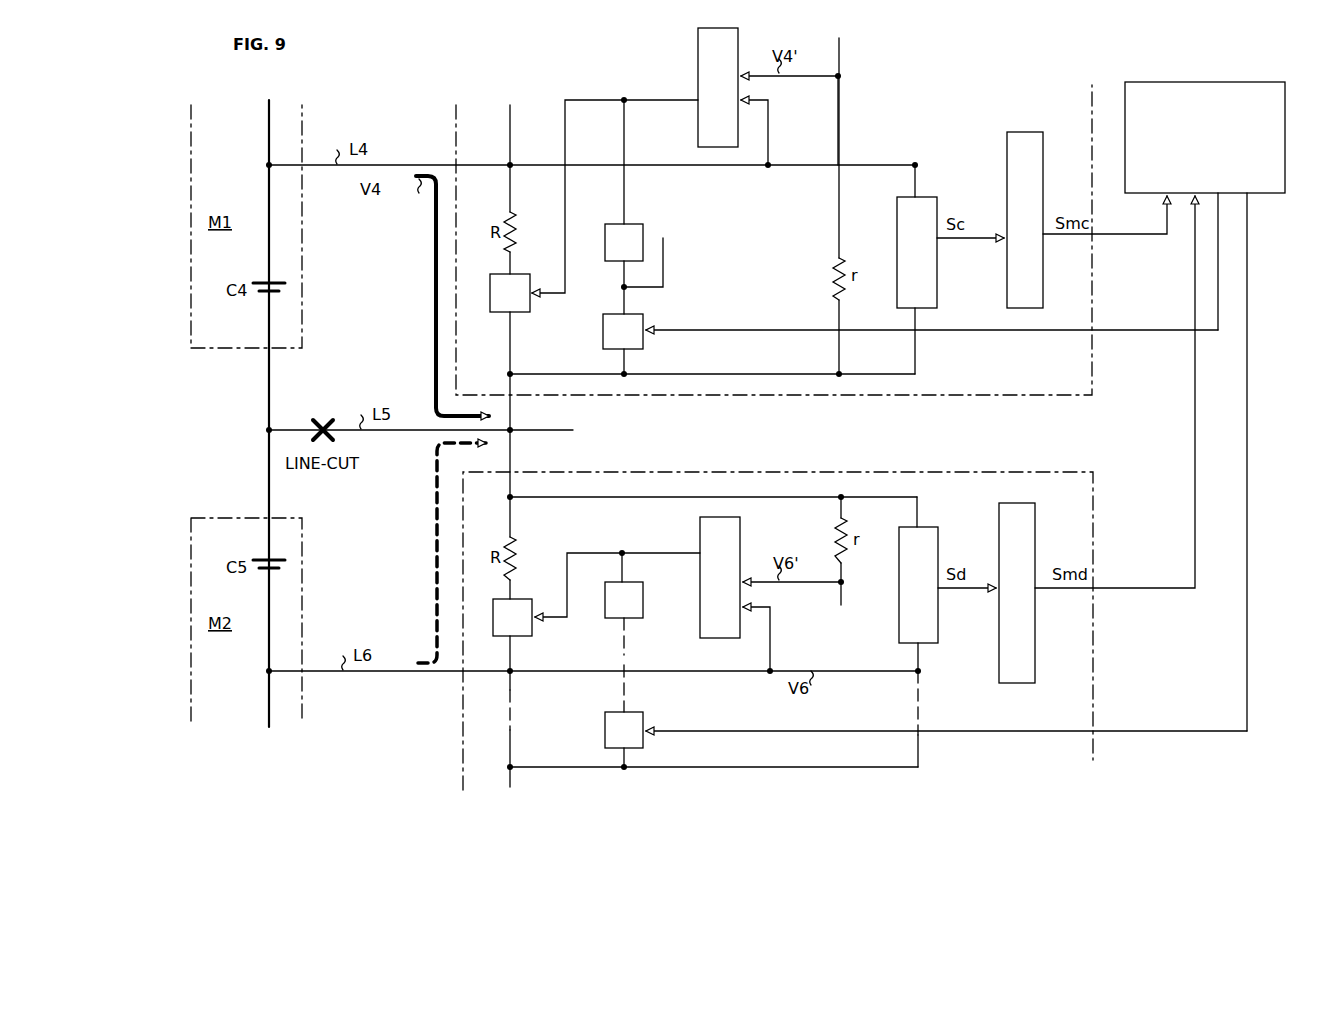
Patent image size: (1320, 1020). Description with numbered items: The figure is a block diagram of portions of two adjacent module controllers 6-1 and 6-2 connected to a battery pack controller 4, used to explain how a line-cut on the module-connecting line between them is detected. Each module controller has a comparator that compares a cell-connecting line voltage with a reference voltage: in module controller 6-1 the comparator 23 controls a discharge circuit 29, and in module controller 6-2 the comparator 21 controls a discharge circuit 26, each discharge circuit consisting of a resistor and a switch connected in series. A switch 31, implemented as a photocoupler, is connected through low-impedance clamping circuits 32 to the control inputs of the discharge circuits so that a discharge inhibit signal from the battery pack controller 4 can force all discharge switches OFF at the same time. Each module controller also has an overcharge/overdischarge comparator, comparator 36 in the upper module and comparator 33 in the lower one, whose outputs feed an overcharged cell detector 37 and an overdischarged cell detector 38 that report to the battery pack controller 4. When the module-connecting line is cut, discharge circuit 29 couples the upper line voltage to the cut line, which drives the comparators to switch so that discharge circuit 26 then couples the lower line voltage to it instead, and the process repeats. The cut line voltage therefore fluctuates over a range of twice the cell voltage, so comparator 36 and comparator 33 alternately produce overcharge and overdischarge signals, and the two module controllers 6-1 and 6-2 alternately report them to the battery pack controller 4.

The battery pack controller 4 is at (1195, 82).
The module controller 6-1 is at (643, 395).
The module controller 6-2 is at (643, 472).
The comparator 21 is at (700, 610).
The comparator 23 is at (715, 28).
The discharge circuit 26 is at (523, 604).
The discharge circuit 29 is at (517, 278).
The switch 31 is at (645, 330).
The low-impedance clamping circuit 32 is at (624, 421).
The comparator 33 is at (938, 550).
The comparator 36 is at (928, 197).
The overcharged cell detector 37 is at (1022, 132).
The overdischarged cell detector 38 is at (1018, 503).